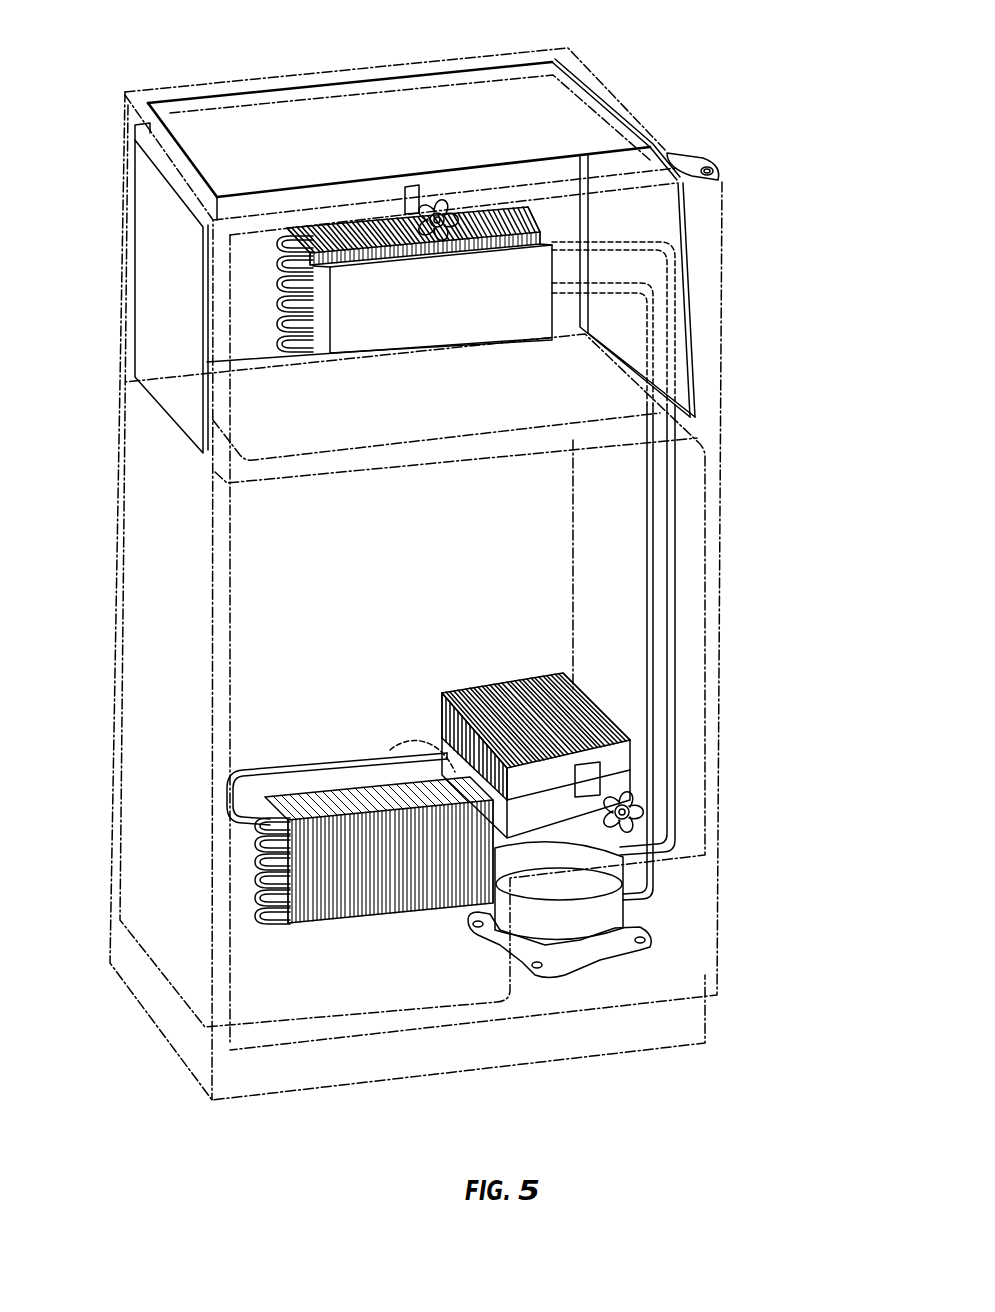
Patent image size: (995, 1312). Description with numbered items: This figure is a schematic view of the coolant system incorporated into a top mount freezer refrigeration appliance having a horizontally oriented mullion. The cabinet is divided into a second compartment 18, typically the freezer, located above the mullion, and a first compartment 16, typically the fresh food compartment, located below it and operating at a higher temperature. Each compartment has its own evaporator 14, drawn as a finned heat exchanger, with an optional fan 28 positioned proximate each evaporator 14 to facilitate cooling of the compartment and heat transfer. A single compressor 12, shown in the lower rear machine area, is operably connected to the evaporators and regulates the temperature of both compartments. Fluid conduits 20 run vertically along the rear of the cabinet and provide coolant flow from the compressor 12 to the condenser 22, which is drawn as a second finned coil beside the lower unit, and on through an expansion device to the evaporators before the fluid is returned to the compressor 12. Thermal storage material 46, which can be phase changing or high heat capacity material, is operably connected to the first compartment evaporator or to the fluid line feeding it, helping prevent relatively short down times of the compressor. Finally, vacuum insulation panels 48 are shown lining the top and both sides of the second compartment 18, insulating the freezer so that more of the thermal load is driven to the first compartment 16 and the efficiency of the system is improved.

The compressor 12 is at (610, 915).
The evaporator 14 is at (502, 210).
The first compartment 16 is at (532, 623).
The second compartment 18 is at (618, 265).
The fluid conduits 20 is at (647, 495).
The condenser 22 is at (337, 788).
The fan 28 is at (428, 187).
The thermal storage material 46 is at (553, 273).
The vacuum insulation panels 48 is at (167, 305).